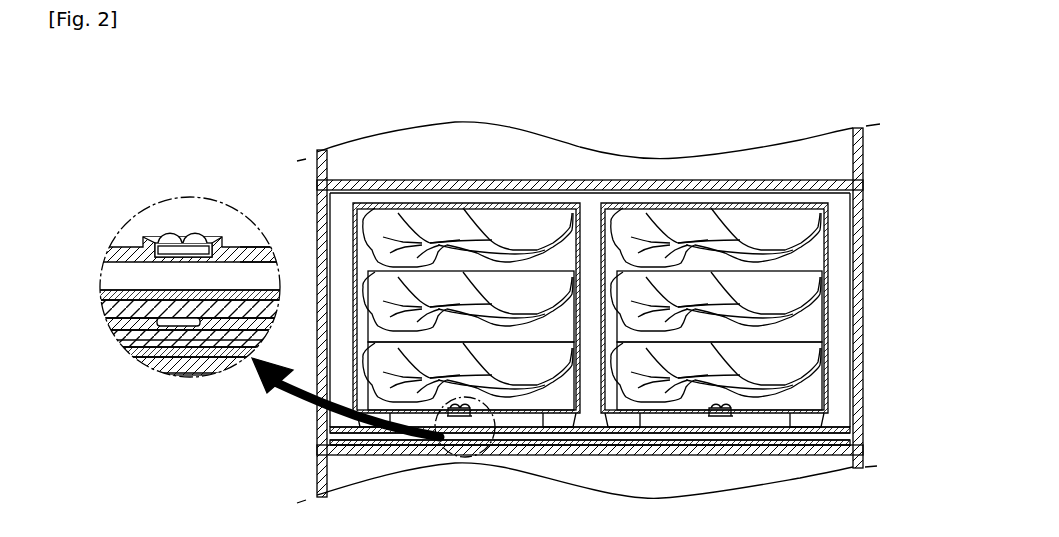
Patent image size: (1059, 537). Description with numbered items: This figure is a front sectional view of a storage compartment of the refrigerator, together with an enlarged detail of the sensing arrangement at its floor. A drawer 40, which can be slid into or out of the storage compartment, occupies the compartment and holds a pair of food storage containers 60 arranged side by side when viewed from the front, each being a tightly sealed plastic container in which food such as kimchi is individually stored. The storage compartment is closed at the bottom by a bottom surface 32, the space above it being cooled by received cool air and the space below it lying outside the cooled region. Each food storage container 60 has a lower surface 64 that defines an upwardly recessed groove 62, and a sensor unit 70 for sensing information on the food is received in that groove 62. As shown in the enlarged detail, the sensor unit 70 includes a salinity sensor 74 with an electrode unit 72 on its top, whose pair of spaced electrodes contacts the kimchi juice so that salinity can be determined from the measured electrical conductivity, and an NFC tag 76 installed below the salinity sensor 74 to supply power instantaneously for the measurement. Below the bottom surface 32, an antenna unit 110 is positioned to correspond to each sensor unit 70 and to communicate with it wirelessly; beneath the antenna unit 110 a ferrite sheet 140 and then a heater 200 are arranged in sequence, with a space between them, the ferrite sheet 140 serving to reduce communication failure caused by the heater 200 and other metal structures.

The bottom surface 32 is at (478, 433).
The drawer 40 is at (318, 210).
The food storage container 60 is at (625, 209).
The groove 62 is at (235, 247).
The lower surface 64 is at (255, 252).
The sensor unit 70 is at (160, 177).
The electrode unit 72 is at (200, 235).
The salinity sensor 74 is at (164, 251).
The NFC tag 76 is at (153, 248).
The antenna unit 110 is at (170, 319).
The ferrite sheet 140 is at (212, 331).
The heater 200 is at (168, 343).